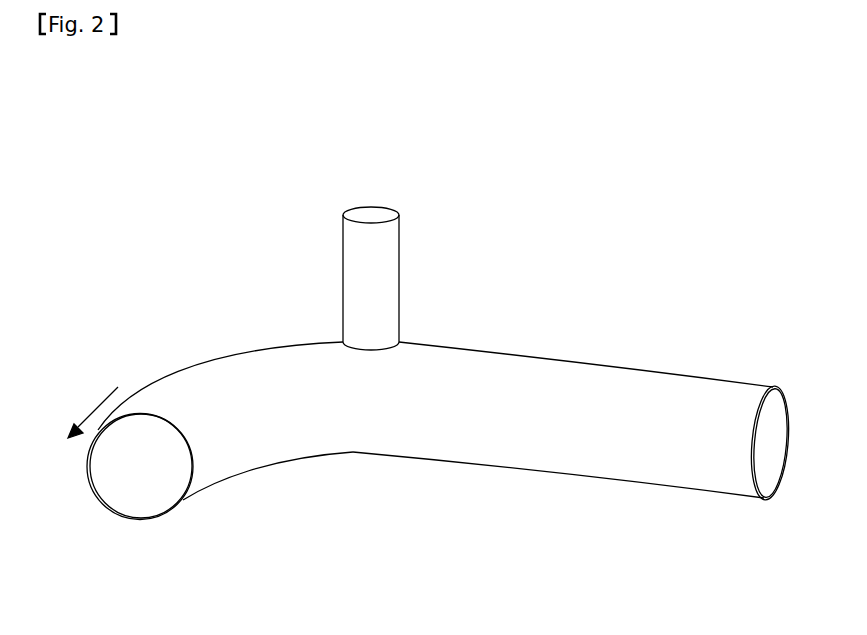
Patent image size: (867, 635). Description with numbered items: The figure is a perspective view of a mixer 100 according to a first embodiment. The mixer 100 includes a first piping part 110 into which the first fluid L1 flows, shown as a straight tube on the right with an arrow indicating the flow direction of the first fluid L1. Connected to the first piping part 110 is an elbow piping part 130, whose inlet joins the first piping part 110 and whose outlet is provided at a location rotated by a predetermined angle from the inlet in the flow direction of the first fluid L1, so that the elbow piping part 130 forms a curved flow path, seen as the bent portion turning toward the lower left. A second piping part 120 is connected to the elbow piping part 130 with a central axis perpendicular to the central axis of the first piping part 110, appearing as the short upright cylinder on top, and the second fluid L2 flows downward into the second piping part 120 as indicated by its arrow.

The mixer 100 is at (111, 120).
The first piping part 110 is at (683, 497).
The second piping part 120 is at (378, 188).
The elbow piping part 130 is at (342, 456).
The first fluid L1 is at (602, 338).
The second fluid L2 is at (316, 310).